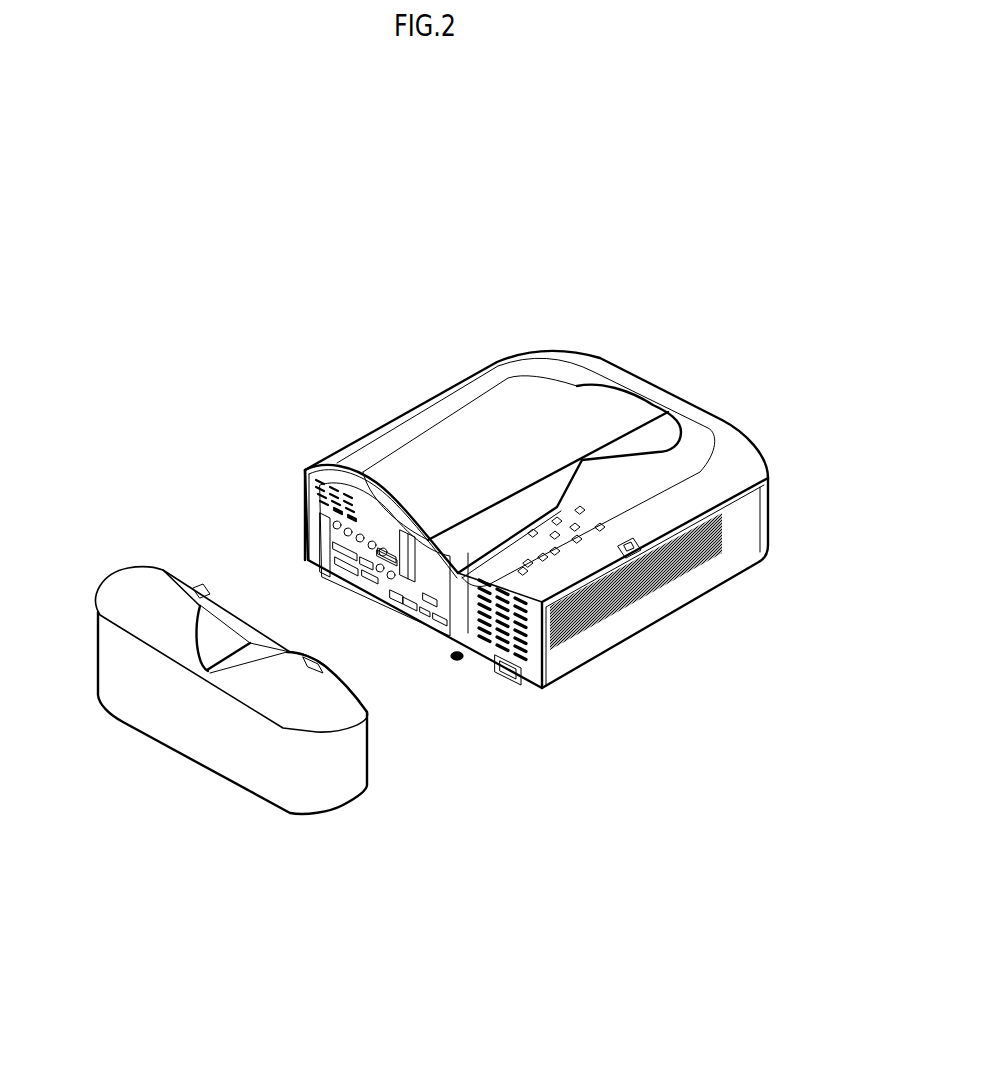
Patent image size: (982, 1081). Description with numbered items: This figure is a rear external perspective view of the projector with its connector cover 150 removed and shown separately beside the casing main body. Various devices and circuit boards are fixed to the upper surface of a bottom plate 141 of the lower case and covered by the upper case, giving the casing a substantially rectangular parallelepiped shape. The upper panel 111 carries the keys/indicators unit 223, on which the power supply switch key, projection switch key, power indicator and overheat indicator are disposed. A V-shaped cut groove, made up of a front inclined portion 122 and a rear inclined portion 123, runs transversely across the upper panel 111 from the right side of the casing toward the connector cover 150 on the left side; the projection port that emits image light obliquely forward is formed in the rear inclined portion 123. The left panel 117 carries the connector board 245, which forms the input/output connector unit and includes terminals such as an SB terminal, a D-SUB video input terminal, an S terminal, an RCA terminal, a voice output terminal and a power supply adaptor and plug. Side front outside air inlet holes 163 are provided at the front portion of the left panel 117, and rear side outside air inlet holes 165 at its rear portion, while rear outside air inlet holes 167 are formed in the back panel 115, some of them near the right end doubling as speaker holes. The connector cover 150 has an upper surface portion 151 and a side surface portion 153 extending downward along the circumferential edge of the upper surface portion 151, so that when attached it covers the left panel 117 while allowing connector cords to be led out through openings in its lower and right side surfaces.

The upper panel 111 is at (523, 392).
The front inclined portion 122 is at (123, 760).
The rear inclined portion 123 is at (190, 800).
The side front outside air inlet holes 163 is at (303, 470).
The connector board 245 is at (386, 565).
The bottom plate 141 is at (335, 569).
The keys/indicators unit 223 is at (660, 588).
The back panel 115 is at (650, 613).
The rear outside air inlet holes 167 is at (610, 613).
The left panel 117 is at (463, 613).
The rear side outside air inlet holes 165 is at (520, 667).
The connector cover 150 is at (268, 746).
The upper surface portion 151 is at (287, 695).
The side surface portion 153 is at (277, 758).